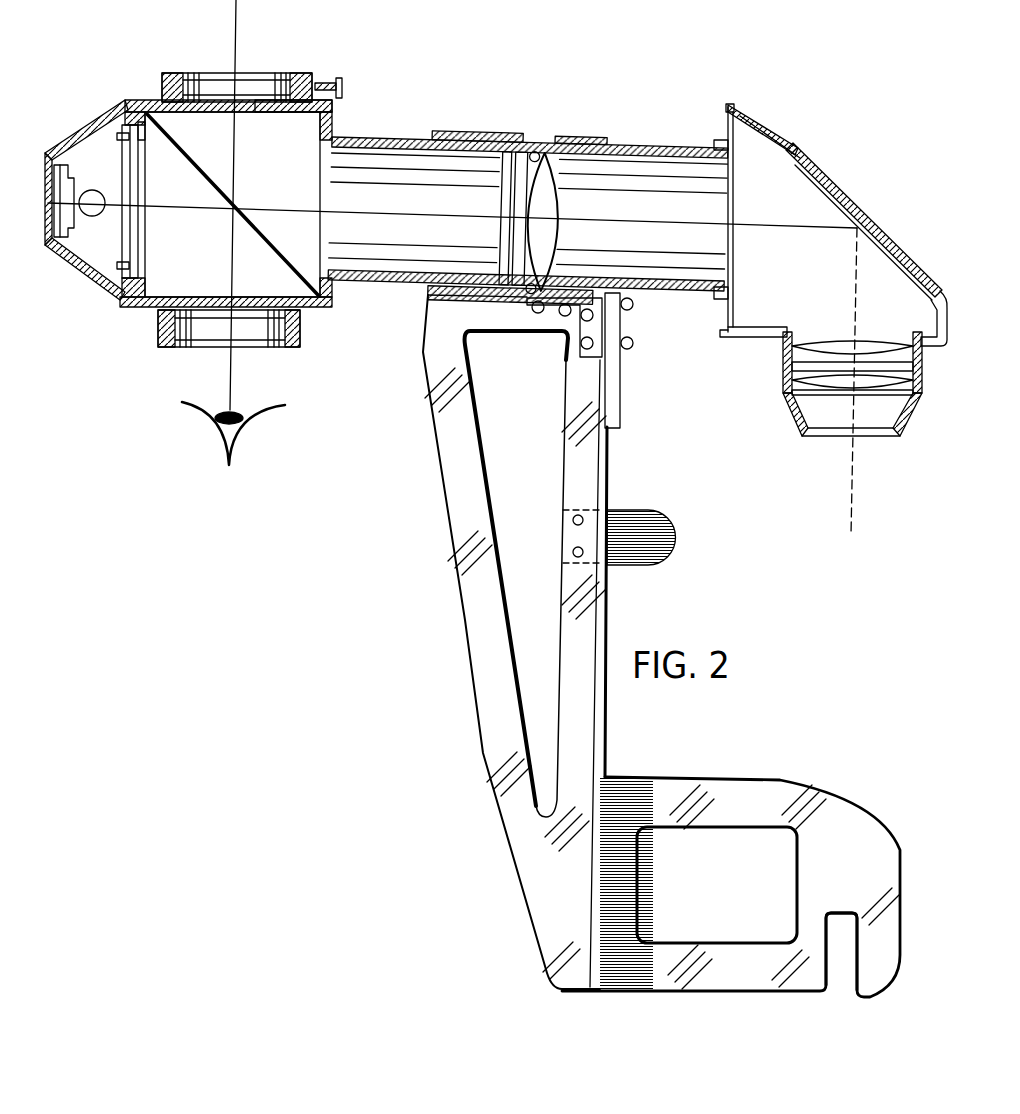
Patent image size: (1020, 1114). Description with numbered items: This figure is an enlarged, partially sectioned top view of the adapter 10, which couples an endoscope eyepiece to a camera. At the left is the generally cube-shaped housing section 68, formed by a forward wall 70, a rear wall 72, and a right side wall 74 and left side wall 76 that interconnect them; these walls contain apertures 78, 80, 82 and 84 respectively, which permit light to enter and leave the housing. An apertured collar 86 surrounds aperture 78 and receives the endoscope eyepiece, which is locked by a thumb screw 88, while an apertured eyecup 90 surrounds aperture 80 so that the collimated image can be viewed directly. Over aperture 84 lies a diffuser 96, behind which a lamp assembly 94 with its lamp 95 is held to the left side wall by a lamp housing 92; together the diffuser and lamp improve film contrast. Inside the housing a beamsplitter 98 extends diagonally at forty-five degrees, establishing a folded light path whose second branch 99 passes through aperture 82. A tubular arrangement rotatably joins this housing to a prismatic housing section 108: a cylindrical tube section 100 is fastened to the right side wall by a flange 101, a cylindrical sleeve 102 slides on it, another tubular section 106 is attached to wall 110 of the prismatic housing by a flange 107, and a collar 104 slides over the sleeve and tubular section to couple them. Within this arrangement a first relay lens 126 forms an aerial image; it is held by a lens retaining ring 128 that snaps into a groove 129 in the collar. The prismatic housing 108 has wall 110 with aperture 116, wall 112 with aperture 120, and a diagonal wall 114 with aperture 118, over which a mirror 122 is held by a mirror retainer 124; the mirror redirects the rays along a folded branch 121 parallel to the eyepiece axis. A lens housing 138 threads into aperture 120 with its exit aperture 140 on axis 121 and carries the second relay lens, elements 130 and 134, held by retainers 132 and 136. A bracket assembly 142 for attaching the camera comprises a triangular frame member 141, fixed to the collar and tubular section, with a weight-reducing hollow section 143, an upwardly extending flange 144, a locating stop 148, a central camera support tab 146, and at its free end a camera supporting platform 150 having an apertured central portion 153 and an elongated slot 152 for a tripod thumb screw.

The adapter 10 is at (482, 122).
The cube-shaped housing section 68 is at (142, 96).
The forward wall 70 is at (158, 99).
The rear wall 72 is at (312, 313).
The right side wall 74 is at (334, 120).
The left side wall 76 is at (145, 283).
The forward wall aperture 78 is at (266, 113).
The rear wall aperture 80 is at (260, 299).
The right side wall aperture 82 is at (333, 257).
The left side wall aperture 84 is at (146, 137).
The apertured collar 86 is at (298, 84).
The thumb screw 88 is at (343, 88).
The apertured eyecup 90 is at (303, 331).
The lamp housing 92 is at (106, 128).
The lamp assembly 94 is at (78, 160).
The lamp 95 is at (92, 191).
The diffuser 96 is at (128, 230).
The beamsplitter 98 is at (277, 253).
The second branch of folded light path 99 is at (371, 212).
The cylindrical tube section 100 is at (444, 152).
The flange 101 is at (333, 287).
The cylindrical sleeve 102 is at (375, 133).
The collar 104 is at (593, 140).
The cylindrical tubular section 106 is at (640, 143).
The flange 107 is at (721, 139).
The prismatic housing section 108 is at (768, 126).
The forward wall of prismatic housing 110 is at (728, 106).
The rear wall of prismatic housing 112 is at (750, 338).
The diagonal wall 114 is at (774, 138).
The aperture of wall 110 116 is at (730, 274).
The aperture of diagonal wall 118 is at (800, 173).
The aperture of wall 112 120 is at (790, 331).
The folded branch of second folded light path 121 is at (857, 258).
The mirror 122 is at (900, 262).
The mirror retainer 124 is at (887, 233).
The first relay lens 126 is at (565, 200).
The lens retaining ring 128 is at (527, 141).
The groove 129 is at (541, 143).
The second relay lens element 130 is at (833, 349).
The retainer 132 is at (900, 366).
The second relay lens element 134 is at (877, 381).
The retainer 136 is at (807, 395).
The lens housing 138 is at (921, 391).
The exit aperture 140 is at (885, 437).
The frame member 141 is at (459, 578).
The bracket assembly 142 is at (482, 768).
The hollowed out central triangular section 143 is at (482, 427).
The upwardly extending flange 144 is at (610, 481).
The camera support tab 146 is at (670, 529).
The locating stop 148 is at (622, 412).
The camera supporting platform 150 is at (762, 781).
The elongated slot 152 is at (832, 978).
The apertured central portion 153 is at (747, 830).